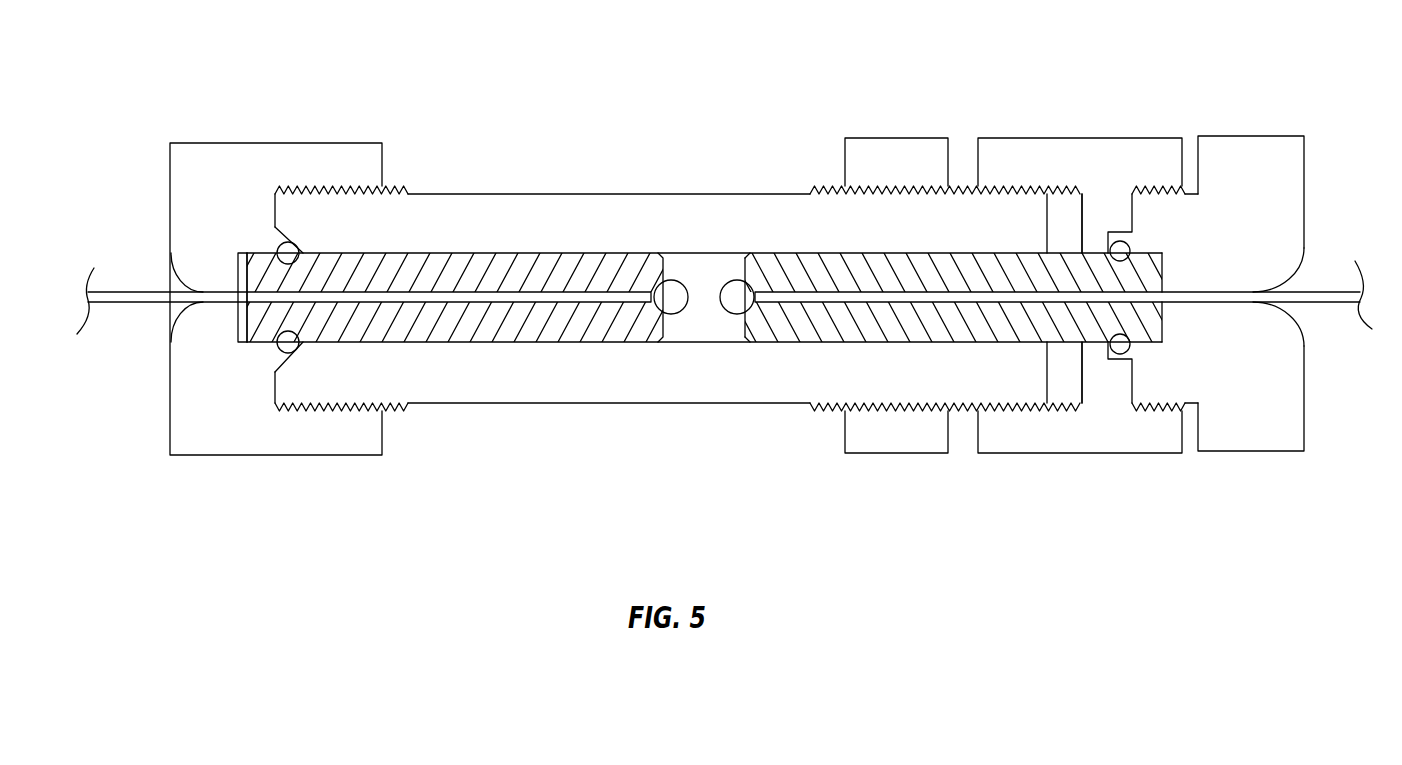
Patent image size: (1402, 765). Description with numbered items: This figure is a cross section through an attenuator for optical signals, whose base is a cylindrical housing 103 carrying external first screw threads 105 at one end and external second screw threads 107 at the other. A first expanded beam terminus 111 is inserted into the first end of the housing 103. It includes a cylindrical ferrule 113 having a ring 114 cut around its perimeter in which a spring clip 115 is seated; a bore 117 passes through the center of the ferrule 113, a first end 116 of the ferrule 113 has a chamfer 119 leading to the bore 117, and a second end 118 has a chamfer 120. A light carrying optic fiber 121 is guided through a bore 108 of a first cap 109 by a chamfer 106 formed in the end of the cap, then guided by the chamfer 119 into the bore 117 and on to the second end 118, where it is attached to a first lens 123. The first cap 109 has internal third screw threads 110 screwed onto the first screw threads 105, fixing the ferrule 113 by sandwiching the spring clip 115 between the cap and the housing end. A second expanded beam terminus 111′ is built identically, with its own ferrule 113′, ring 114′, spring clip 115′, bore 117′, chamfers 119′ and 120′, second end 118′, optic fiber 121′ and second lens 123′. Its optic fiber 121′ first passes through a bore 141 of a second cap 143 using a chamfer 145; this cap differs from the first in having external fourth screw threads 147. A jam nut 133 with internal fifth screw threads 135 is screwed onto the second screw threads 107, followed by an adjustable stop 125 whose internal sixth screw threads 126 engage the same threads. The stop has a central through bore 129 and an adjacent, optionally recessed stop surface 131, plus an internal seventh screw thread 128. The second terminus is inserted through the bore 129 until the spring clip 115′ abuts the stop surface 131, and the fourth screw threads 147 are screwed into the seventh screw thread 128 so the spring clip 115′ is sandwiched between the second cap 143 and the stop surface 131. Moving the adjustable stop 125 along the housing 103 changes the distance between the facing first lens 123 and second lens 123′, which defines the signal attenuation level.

The cylindrical housing 103 is at (512, 208).
The first screw threads 105 is at (393, 183).
The chamfer 106 is at (177, 316).
The second screw threads 107 is at (968, 182).
The bore 108 is at (230, 292).
The first cap 109 is at (192, 155).
The third screw threads 110 is at (313, 183).
The first expanded beam terminus 111 is at (521, 372).
The second expanded beam terminus 111′ is at (822, 372).
The ferrule 113 is at (552, 280).
The ferrule 113′ is at (815, 272).
The ring 114 is at (300, 266).
The ring 114′ is at (1113, 262).
The spring clip 115 is at (287, 351).
The spring clip 115′ is at (1122, 251).
The first end 116 is at (241, 242).
The bore 117 is at (380, 268).
The bore 117′ is at (1007, 278).
The second end 118 is at (673, 292).
The second end 118′ is at (743, 282).
The chamfer 119 is at (248, 312).
The chamfer 119′ is at (1158, 284).
The chamfer 120 is at (652, 318).
The chamfer 120′ is at (755, 318).
The optic fiber 121 is at (103, 306).
The optic fiber 121′ is at (1322, 304).
The first lens 123 is at (686, 283).
The second lens 123′ is at (725, 280).
The adjustable stop 125 is at (1080, 142).
The sixth screw threads 126 is at (1060, 187).
The seventh screw thread 128 is at (1165, 187).
The through bore 129 is at (1099, 343).
The stop surface 131 is at (1095, 245).
The jam nut 133 is at (875, 142).
The fifth screw threads 135 is at (878, 410).
The bore 141 is at (1228, 290).
The second cap 143 is at (1246, 141).
The chamfer 145 is at (1305, 264).
The fourth screw threads 147 is at (1188, 190).